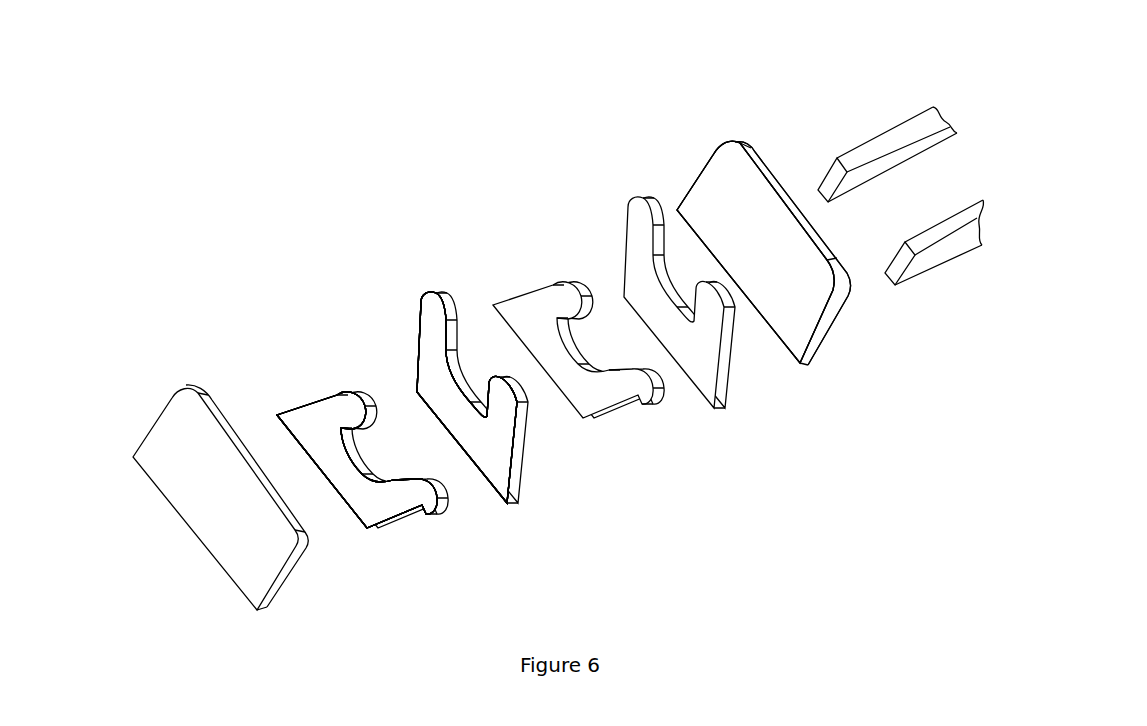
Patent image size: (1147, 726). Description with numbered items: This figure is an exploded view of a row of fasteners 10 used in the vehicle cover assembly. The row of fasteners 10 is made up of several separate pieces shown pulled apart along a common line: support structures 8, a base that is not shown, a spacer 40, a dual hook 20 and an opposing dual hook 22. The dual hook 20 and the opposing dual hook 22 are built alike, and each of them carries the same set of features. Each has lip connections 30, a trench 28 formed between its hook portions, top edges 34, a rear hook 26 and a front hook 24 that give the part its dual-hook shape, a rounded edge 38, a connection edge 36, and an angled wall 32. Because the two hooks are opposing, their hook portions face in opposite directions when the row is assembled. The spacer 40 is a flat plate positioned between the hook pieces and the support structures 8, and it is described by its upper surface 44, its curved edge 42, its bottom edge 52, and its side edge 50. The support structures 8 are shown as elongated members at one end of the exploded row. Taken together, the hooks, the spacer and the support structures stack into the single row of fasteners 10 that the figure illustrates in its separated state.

The support structures 8 is at (953, 215).
The row of fasteners 10 is at (348, 132).
The dual hook 20 is at (423, 243).
The opposing dual hook 22 is at (390, 542).
The front hook 24 is at (427, 290).
The rear hook 26 is at (490, 373).
The trench 28 is at (467, 400).
The lip connections 30 is at (420, 295).
The angled wall 32 is at (320, 397).
The top edges 34 is at (437, 288).
The connection edge 36 is at (317, 468).
The rounded edge 38 is at (445, 310).
The spacer 40 is at (810, 387).
The curved edge 42 is at (777, 200).
The upper surface 44 is at (775, 198).
The side edge 50 is at (823, 333).
The bottom edge 52 is at (762, 323).